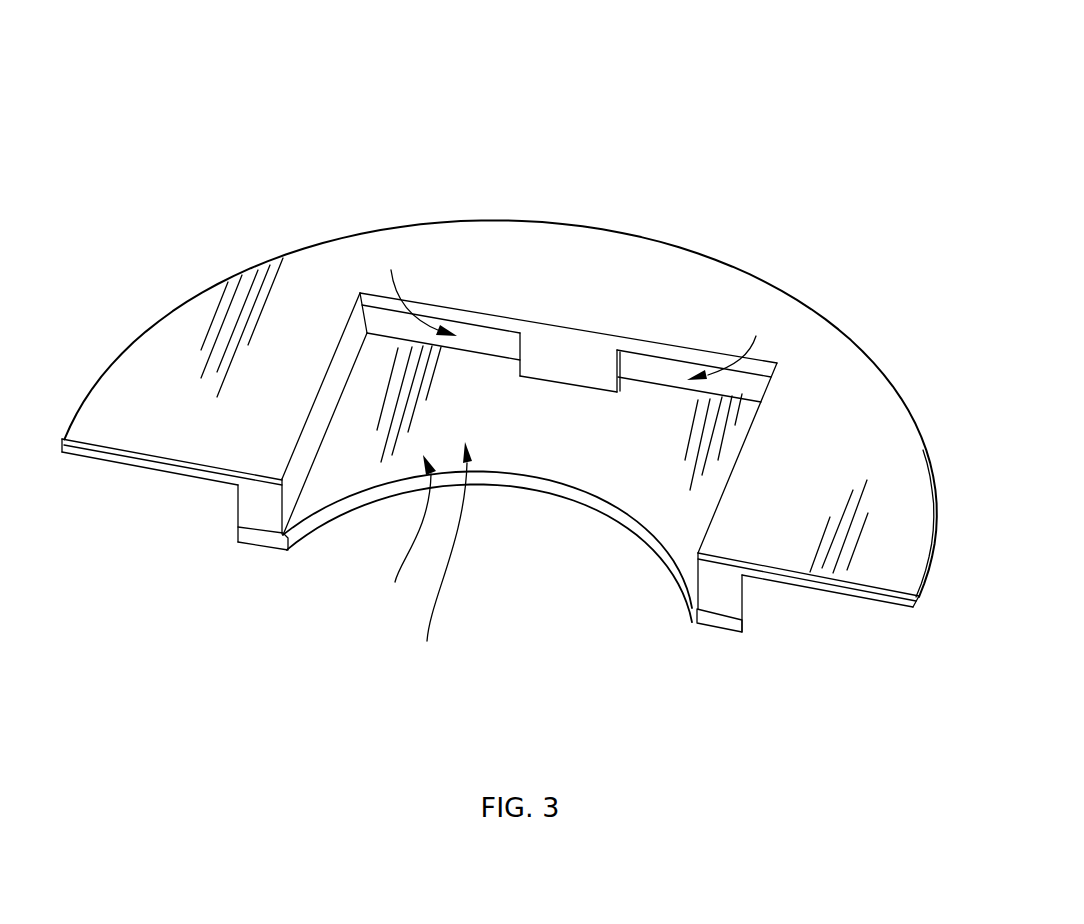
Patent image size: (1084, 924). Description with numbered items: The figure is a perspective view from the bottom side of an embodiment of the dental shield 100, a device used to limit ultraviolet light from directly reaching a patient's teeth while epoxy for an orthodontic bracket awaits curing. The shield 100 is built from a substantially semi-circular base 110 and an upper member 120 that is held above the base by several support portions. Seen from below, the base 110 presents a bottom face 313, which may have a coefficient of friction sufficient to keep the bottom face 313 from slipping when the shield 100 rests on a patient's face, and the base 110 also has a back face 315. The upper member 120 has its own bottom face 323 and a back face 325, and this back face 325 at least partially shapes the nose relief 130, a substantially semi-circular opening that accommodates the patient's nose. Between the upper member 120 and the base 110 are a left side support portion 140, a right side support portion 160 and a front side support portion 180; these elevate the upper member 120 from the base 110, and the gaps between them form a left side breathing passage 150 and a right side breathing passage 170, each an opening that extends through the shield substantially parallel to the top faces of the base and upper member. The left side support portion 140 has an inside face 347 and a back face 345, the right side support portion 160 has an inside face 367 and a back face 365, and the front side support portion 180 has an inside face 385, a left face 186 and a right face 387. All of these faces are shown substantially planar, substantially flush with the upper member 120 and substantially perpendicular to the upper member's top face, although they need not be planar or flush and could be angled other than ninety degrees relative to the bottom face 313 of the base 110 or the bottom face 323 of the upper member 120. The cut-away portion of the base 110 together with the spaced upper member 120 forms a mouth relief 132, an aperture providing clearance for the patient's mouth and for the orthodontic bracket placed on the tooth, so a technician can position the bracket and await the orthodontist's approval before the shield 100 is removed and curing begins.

The dental shield 100 is at (631, 84).
The base 110 is at (185, 352).
The upper member 120 is at (405, 532).
The nose relief 130 is at (594, 553).
The mouth relief 132 is at (439, 555).
The left side support portion 140 is at (257, 508).
The left side breathing passage 150 is at (441, 302).
The right side support portion 160 is at (730, 585).
The right side breathing passage 170 is at (698, 400).
The front side support portion 180 is at (573, 338).
The left face 186 is at (520, 353).
The bottom face 313 is at (297, 369).
The back face 315 is at (153, 465).
The bottom face 323 is at (559, 444).
The back face 325 is at (558, 492).
The back face 345 is at (270, 520).
The inside face 347 is at (300, 467).
The back face 365 is at (717, 592).
The inside face 367 is at (697, 575).
The inside face 385 is at (585, 367).
The right face 387 is at (617, 373).